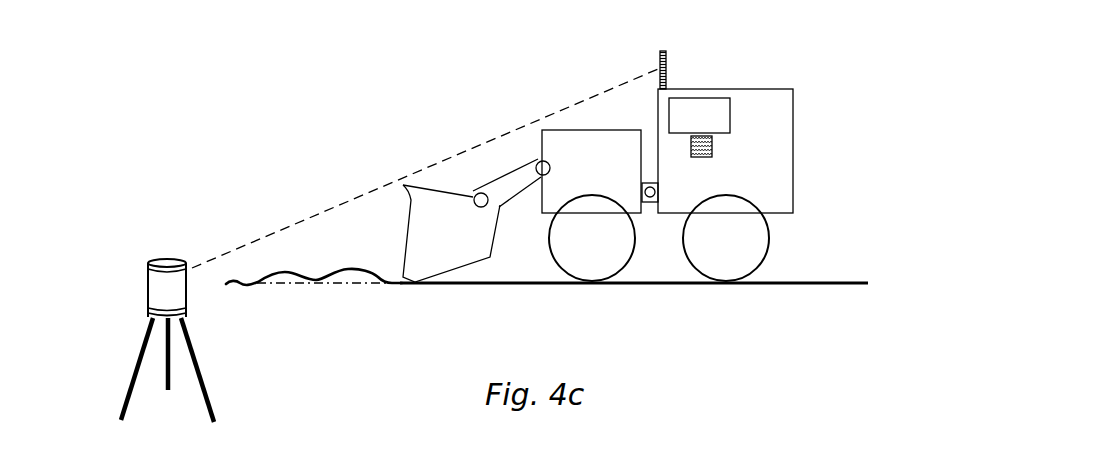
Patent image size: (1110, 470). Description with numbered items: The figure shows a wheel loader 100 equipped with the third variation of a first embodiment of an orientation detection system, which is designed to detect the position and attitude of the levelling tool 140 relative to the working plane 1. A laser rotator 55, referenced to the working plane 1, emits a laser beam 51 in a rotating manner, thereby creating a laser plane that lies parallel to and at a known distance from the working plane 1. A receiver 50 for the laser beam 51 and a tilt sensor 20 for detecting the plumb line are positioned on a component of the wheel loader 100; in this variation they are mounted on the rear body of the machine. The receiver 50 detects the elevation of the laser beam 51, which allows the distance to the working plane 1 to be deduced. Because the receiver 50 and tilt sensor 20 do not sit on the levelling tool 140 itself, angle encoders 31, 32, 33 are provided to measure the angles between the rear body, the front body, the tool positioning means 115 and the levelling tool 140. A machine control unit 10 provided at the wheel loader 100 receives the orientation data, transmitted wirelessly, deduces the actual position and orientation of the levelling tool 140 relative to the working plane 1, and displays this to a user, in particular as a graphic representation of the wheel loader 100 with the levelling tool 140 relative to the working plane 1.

The working plane 1 is at (547, 301).
The machine control unit (MCU) 10 is at (748, 95).
The tilt sensor 20 is at (786, 195).
The angle encoder 31 is at (405, 181).
The angle encoder 32 is at (479, 132).
The angle encoder 33 is at (686, 254).
The receiver 50 is at (601, 70).
The laser beam 51 is at (425, 168).
The laser rotator 55 is at (118, 264).
The wheel loader 100 is at (687, 145).
The tool positioning means 115 is at (451, 166).
The levelling tool 140 is at (506, 258).